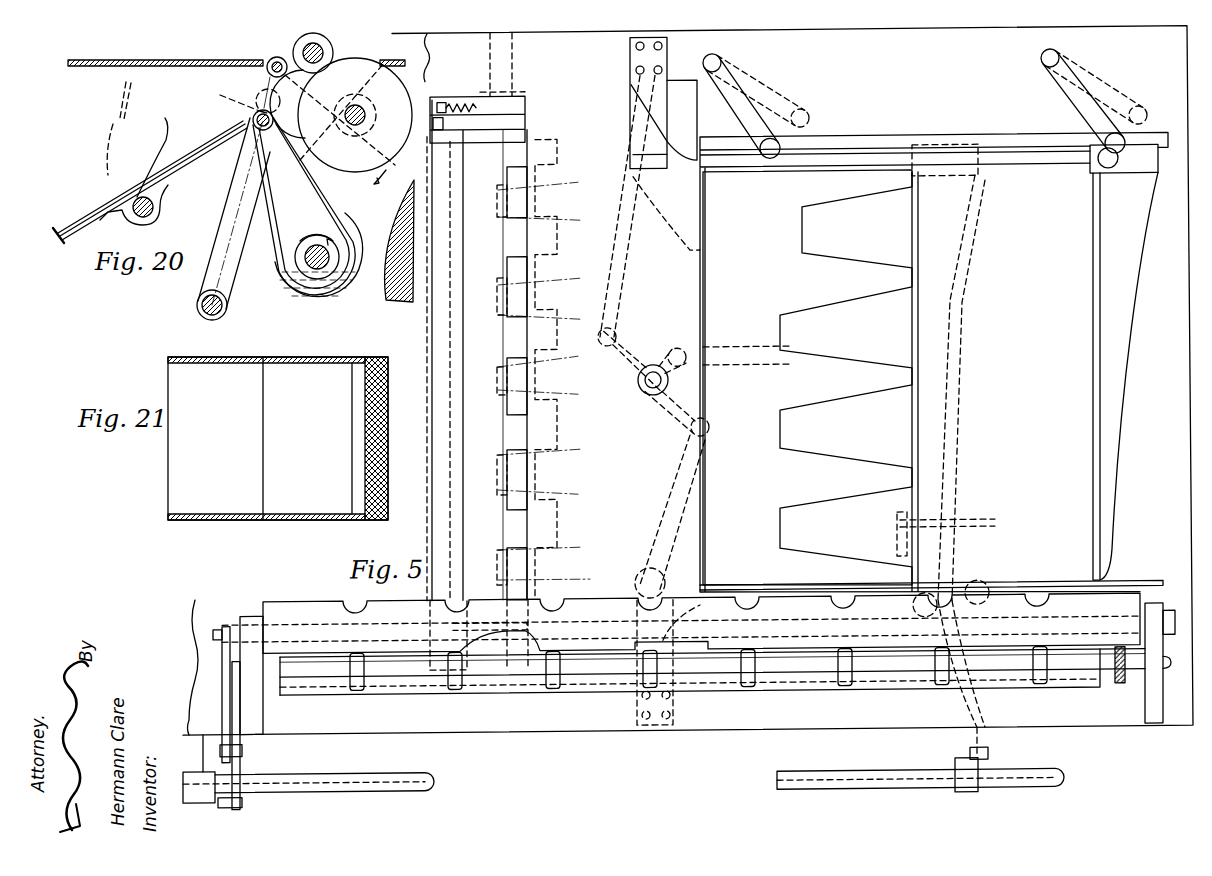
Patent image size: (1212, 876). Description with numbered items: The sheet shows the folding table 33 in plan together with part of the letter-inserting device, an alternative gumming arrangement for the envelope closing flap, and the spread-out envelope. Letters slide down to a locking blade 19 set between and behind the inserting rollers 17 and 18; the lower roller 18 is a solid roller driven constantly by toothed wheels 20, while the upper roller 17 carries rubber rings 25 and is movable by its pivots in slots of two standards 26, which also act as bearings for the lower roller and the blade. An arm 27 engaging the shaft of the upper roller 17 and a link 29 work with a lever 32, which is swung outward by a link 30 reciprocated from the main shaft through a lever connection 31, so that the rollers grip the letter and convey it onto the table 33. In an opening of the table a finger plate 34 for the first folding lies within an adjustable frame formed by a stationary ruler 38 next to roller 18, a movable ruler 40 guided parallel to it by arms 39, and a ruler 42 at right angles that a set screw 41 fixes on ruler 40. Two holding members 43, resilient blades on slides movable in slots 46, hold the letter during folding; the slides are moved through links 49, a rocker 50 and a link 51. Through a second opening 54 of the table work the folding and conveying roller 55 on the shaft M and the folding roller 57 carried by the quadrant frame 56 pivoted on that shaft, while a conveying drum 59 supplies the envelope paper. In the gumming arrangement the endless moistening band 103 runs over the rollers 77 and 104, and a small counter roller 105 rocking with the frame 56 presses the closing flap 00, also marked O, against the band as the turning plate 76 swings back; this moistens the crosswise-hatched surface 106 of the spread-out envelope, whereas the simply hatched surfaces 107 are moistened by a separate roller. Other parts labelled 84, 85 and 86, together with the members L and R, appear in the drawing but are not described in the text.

In FIG. 5, the upper inserting roller 17 is at (418, 685).
In FIG. 5, the lower inserting roller 18 is at (490, 698).
In FIG. 5, the locking blade 19 is at (412, 606).
In FIG. 5, the toothed wheels 20 is at (1118, 684).
In FIG. 5, the rubber rings 25 is at (555, 697).
In FIG. 5, the standards 26 is at (263, 720).
In FIG. 5, the arm 27 is at (222, 694).
In FIG. 5, the link 29 is at (232, 722).
In FIG. 5, the link 30 is at (990, 533).
In FIG. 5, the lever connection 31 is at (950, 594).
In FIG. 5, the lever 32 is at (240, 810).
In FIG. 20, the folding table 33 is at (216, 60).
In FIG. 5, the folding table 33 is at (1188, 486).
In FIG. 5, the finger plate 34 is at (810, 318).
In FIG. 5, the stationary ruler 38 is at (1072, 595).
In FIG. 5, the arms 39 is at (738, 124).
In FIG. 5, the movable ruler 40 is at (876, 155).
In FIG. 5, the set screw 41 is at (1110, 182).
In FIG. 5, the ruler 42 is at (1090, 293).
In FIG. 5, the holding members 43 is at (630, 116).
In FIG. 5, the slots 46 is at (633, 163).
In FIG. 5, the links 49 is at (622, 322).
In FIG. 5, the rocker 50 is at (622, 377).
In FIG. 5, the link 51 is at (754, 375).
In FIG. 5, the opening 54 is at (530, 537).
In FIG. 20, the folding and conveying roller 55 is at (379, 182).
In FIG. 20, the quadrant frame 56 is at (366, 138).
In FIG. 20, the folding roller 57 is at (332, 47).
In FIG. 5, the folding roller 57 is at (463, 442).
In FIG. 20, the conveying drum 59 is at (398, 282).
In FIG. 20, the turning plate 76 is at (185, 114).
In FIG. 20, the roller 77 is at (305, 270).
In FIG. 20, the cylinder 84 is at (230, 262).
In FIG. 20, the guide 85 is at (118, 144).
In FIG. 20, the spring 86 is at (178, 108).
In FIG. 20, the endless moistening band 103 is at (272, 193).
In FIG. 20, the roller 104 is at (255, 128).
In FIG. 20, the counter roller 105 is at (272, 60).
In FIG. 21, the moistened surface 106 is at (389, 348).
In FIG. 21, the moistened surfaces 107 is at (313, 357).
In FIG. 20, the closing flap 00 is at (241, 92).
In FIG. 20, the shaft M is at (366, 115).
In FIG. 20, the closing flap O is at (140, 205).
In FIG. 20, the roller L is at (197, 306).
In FIG. 5, the rod R is at (322, 782).